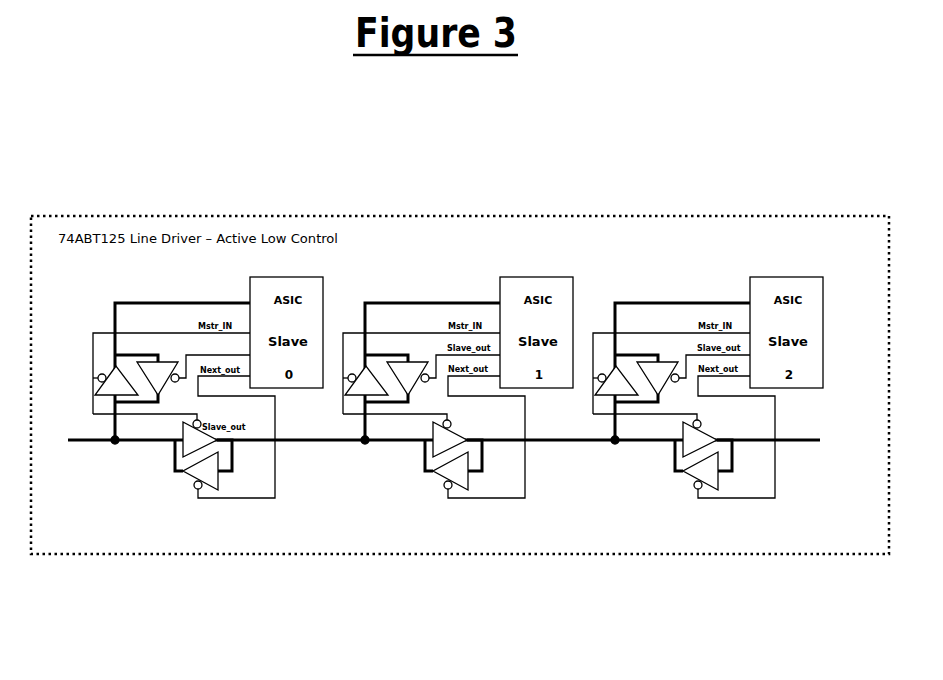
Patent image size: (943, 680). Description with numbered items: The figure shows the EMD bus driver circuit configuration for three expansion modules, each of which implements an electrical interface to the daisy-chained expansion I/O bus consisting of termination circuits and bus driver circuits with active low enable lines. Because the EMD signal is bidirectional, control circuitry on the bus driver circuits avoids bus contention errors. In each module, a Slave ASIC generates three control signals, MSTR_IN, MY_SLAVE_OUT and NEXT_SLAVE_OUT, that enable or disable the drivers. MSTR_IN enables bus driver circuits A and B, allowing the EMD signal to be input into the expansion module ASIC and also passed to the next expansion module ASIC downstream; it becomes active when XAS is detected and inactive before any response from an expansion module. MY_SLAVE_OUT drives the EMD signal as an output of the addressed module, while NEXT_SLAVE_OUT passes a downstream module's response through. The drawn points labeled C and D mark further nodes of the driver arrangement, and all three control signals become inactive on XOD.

The bus driver circuit A is at (444, 468).
The bus driver circuit B is at (397, 509).
The bidirectional line driver pair C is at (444, 456).
The node D is at (484, 514).